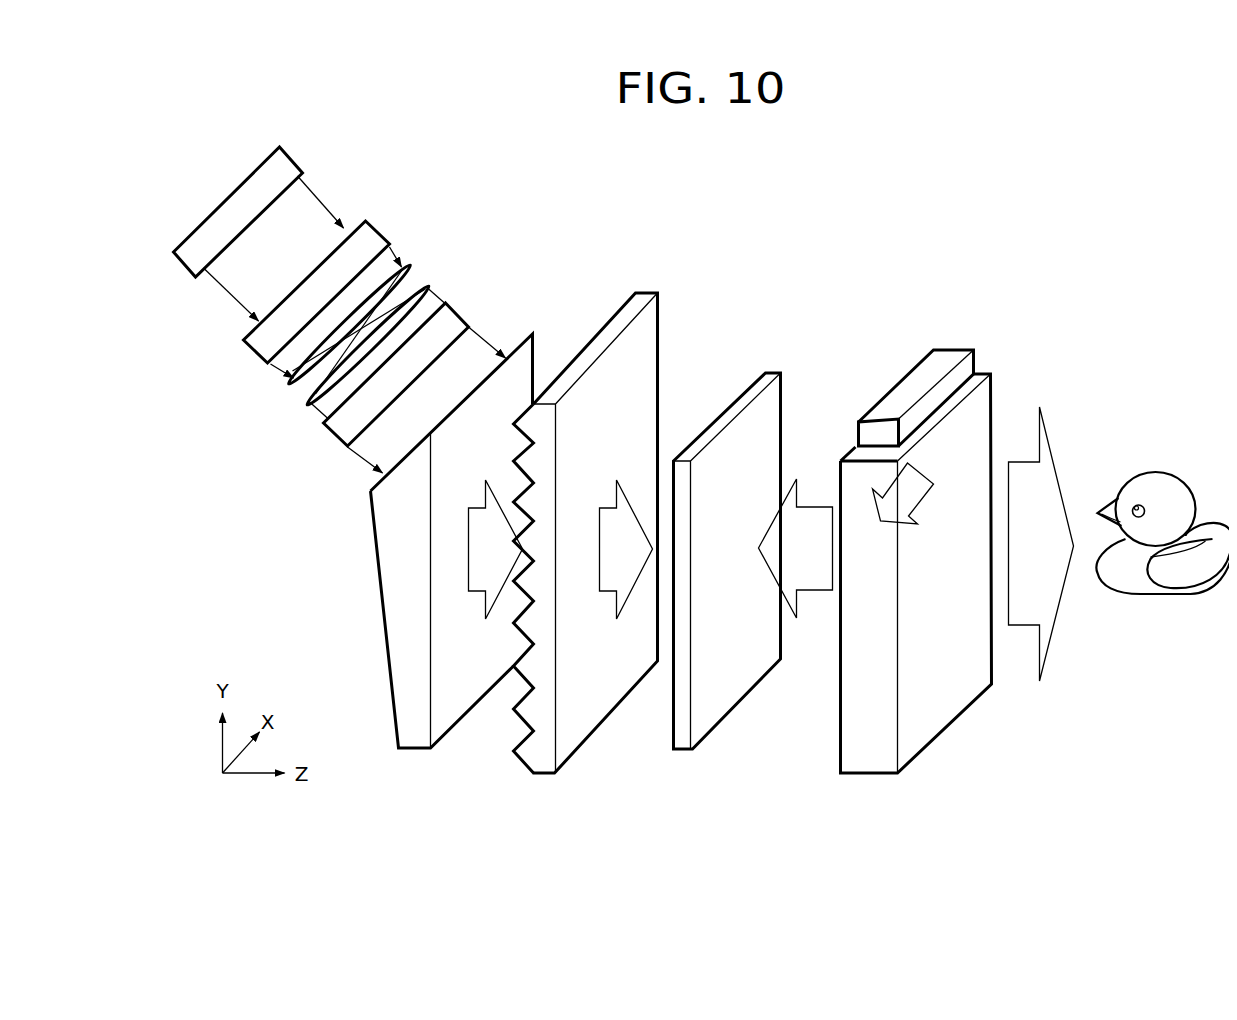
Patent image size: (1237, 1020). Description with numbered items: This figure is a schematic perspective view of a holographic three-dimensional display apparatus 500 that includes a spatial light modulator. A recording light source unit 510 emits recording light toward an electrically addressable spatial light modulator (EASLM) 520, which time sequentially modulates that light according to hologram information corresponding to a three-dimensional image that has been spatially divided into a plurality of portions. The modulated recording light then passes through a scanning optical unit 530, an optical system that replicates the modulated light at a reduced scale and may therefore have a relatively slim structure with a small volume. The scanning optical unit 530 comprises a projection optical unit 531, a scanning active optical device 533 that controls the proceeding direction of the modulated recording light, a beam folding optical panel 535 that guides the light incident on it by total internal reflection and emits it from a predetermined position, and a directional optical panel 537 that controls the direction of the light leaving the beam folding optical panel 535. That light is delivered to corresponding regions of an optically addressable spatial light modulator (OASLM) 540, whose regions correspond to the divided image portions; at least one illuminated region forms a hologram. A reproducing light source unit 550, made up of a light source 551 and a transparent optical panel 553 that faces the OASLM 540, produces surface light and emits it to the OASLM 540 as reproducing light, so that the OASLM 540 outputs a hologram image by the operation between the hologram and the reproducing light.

The holographic 3D display apparatus 500 is at (1123, 254).
The recording light source unit 510 is at (288, 163).
The electrically addressable spatial light modulator (EASLM) 520 is at (373, 235).
The scanning optical unit 530 is at (598, 260).
The projection optical unit 531 is at (445, 286).
The scanning active optical device 533 is at (455, 320).
The beam folding optical panel 535 is at (526, 352).
The directional optical panel 537 is at (607, 328).
The optically addressable spatial light modulator (OASLM) 540 is at (768, 371).
The reproducing light source unit 550 is at (1033, 316).
The light source 551 is at (951, 353).
The transparent optical panel 553 is at (995, 377).